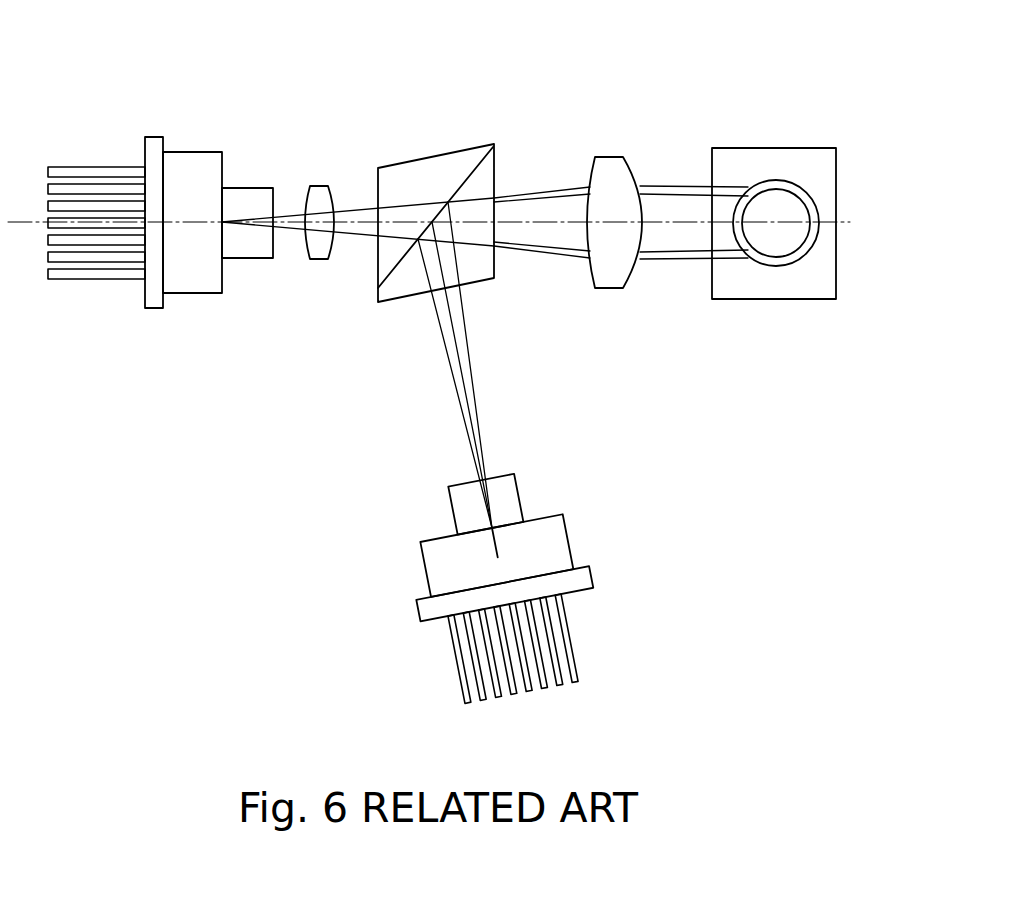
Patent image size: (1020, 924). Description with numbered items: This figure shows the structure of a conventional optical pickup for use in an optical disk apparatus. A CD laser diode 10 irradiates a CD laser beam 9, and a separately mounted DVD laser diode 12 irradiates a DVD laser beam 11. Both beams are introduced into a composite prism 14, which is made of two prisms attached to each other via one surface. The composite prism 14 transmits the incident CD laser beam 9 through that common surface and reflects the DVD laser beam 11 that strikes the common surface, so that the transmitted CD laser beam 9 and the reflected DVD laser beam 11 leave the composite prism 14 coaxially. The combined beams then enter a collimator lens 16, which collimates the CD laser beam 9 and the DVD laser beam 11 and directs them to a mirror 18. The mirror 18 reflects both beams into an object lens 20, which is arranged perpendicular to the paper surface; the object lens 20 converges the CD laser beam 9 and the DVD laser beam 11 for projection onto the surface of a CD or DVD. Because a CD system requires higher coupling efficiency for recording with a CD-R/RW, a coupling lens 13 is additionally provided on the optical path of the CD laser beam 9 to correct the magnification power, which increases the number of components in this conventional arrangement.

The CD laser beam 9 is at (300, 213).
The CD laser diode 10 is at (155, 137).
The DVD laser beam 11 is at (468, 333).
The DVD laser diode 12 is at (425, 583).
The coupling lens 13 is at (317, 185).
The composite prism 14 is at (470, 143).
The collimator lens 16 is at (612, 157).
The mirror 18 is at (836, 172).
The object lens 20 is at (812, 253).